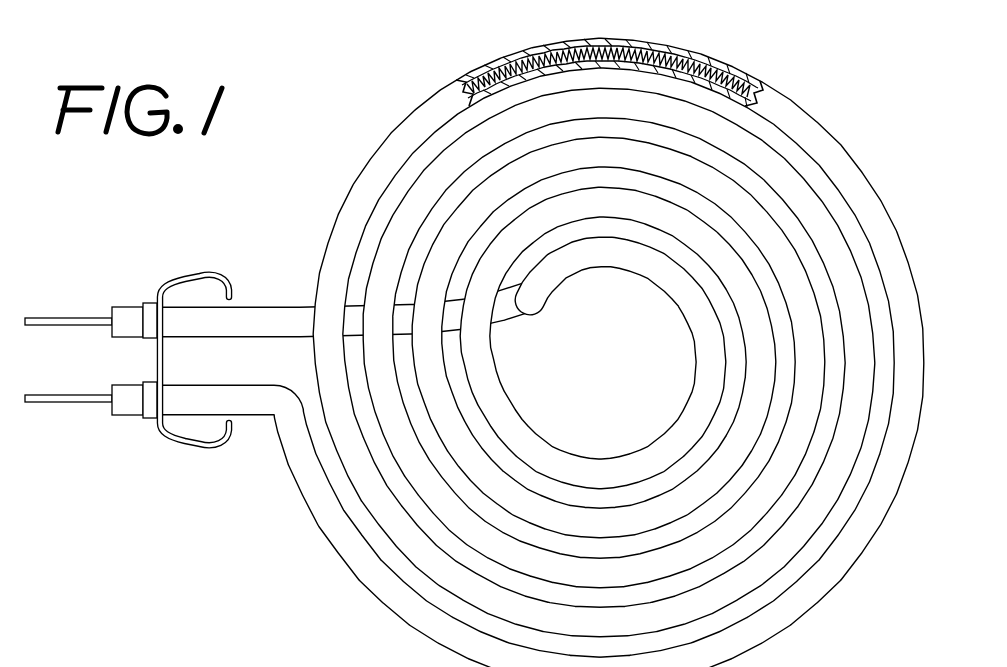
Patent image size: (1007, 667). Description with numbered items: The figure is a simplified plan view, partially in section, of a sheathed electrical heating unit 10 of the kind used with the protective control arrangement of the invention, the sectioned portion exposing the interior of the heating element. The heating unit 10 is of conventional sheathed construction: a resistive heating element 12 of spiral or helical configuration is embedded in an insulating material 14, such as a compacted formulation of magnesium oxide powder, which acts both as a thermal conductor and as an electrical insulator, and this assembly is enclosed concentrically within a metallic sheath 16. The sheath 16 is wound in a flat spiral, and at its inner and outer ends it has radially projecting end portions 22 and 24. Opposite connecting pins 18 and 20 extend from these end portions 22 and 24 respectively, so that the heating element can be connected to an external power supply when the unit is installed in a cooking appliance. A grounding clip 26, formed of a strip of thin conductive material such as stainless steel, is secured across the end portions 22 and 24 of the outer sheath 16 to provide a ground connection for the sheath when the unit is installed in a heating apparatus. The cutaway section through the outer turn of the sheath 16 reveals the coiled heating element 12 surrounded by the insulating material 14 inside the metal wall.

The heating unit 10 is at (534, 333).
The resistive heating element 12 is at (638, 50).
The insulating material 14 is at (572, 45).
The metallic sheath 16 is at (441, 84).
The connecting pin 18 is at (68, 318).
The connecting pin 20 is at (82, 395).
The end portion of sheath 22 is at (127, 307).
The end portion of sheath 24 is at (127, 417).
The grounding clip 26 is at (163, 358).